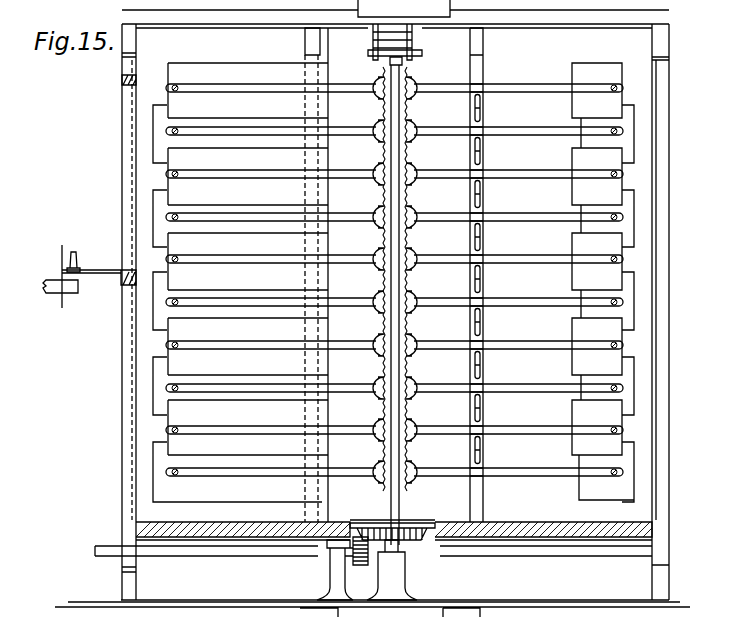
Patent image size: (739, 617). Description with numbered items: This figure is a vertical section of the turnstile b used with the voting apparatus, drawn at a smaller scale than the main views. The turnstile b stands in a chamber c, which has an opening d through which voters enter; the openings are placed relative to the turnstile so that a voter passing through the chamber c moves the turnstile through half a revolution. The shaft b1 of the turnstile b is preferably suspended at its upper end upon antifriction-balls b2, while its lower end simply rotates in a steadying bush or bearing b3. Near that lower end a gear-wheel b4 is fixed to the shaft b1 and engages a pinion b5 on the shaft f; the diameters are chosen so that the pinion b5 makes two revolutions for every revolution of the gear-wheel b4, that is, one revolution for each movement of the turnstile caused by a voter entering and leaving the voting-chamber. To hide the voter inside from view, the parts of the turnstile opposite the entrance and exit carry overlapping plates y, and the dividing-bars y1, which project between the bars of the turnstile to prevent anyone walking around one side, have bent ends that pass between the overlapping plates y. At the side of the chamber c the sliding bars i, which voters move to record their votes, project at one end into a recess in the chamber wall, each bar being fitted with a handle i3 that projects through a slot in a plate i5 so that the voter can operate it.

The overlapping plates y is at (166, 172).
The dividing-bars y1 is at (483, 370).
The opening d is at (455, 280).
The chamber c is at (571, 503).
The shaft f is at (226, 556).
The sliding bars i is at (52, 295).
The handle i3 is at (74, 251).
The plate i5 is at (93, 275).
The turnstile b is at (361, 262).
The shaft b1 is at (383, 118).
The antifriction-balls b2 is at (403, 58).
The steadying bush or bearing b3 is at (411, 568).
The gear-wheel b4 is at (412, 528).
The pinion b5 is at (363, 567).